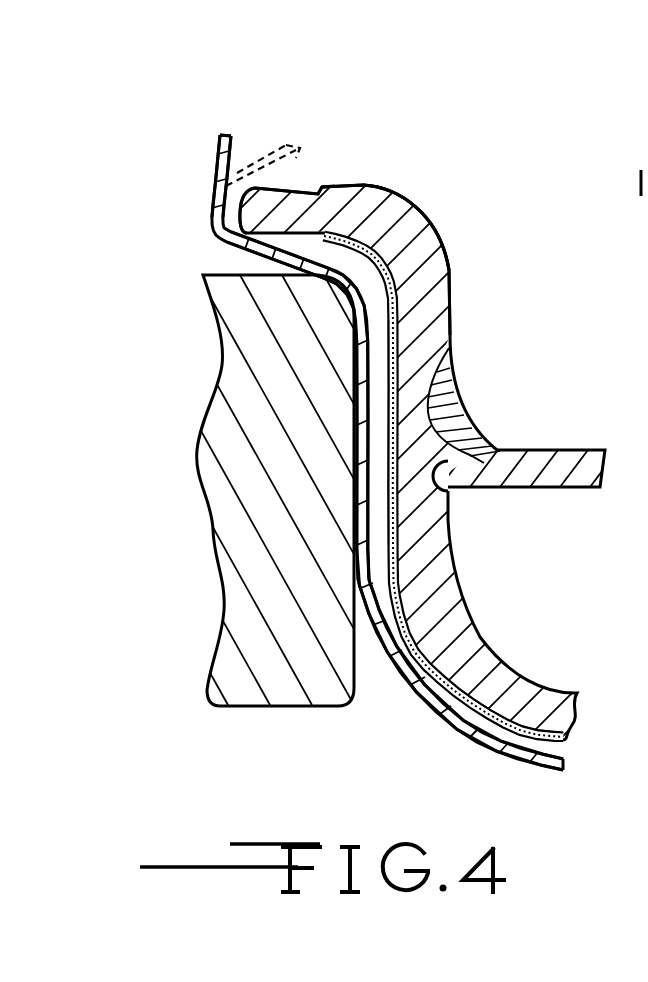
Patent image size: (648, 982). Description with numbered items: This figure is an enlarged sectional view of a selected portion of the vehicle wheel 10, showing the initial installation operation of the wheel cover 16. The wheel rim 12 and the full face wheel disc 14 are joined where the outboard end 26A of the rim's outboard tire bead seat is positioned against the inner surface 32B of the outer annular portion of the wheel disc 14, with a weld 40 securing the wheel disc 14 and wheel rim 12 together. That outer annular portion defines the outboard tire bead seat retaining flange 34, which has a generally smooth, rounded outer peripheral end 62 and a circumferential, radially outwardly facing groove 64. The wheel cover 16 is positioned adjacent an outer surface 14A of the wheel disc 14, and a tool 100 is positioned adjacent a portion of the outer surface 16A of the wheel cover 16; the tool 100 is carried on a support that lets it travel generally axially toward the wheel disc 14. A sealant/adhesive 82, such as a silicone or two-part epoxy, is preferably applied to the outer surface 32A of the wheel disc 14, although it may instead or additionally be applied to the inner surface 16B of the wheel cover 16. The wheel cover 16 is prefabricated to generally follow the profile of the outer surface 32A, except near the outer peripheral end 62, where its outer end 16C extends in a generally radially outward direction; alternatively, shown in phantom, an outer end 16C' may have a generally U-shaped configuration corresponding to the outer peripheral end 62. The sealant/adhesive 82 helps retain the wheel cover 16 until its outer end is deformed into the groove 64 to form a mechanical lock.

The vehicle wheel 10 is at (458, 221).
The wheel rim 12 is at (560, 430).
The wheel disc 14 is at (512, 636).
The outer surface of the wheel disc 14A is at (531, 737).
The wheel cover 16 is at (440, 746).
The outer surface of the wheel cover 16A is at (384, 652).
The inner surface of the wheel cover 16B is at (370, 336).
The outer end of the wheel cover 16C is at (158, 176).
The outer end of the wheel cover 16C' is at (313, 107).
The outboard end of the outboard tire bead seat 26A is at (448, 499).
The outer surface of the outer annular portion 32A is at (386, 442).
The inner surface of the outer annular portion 32B is at (455, 290).
The outboard tire bead seat retaining flange 34 is at (457, 271).
The weld 40 is at (462, 398).
The outer peripheral end 62 is at (258, 215).
The groove 64 is at (310, 186).
The sealant/adhesive 82 is at (360, 228).
The tool 100 is at (232, 520).